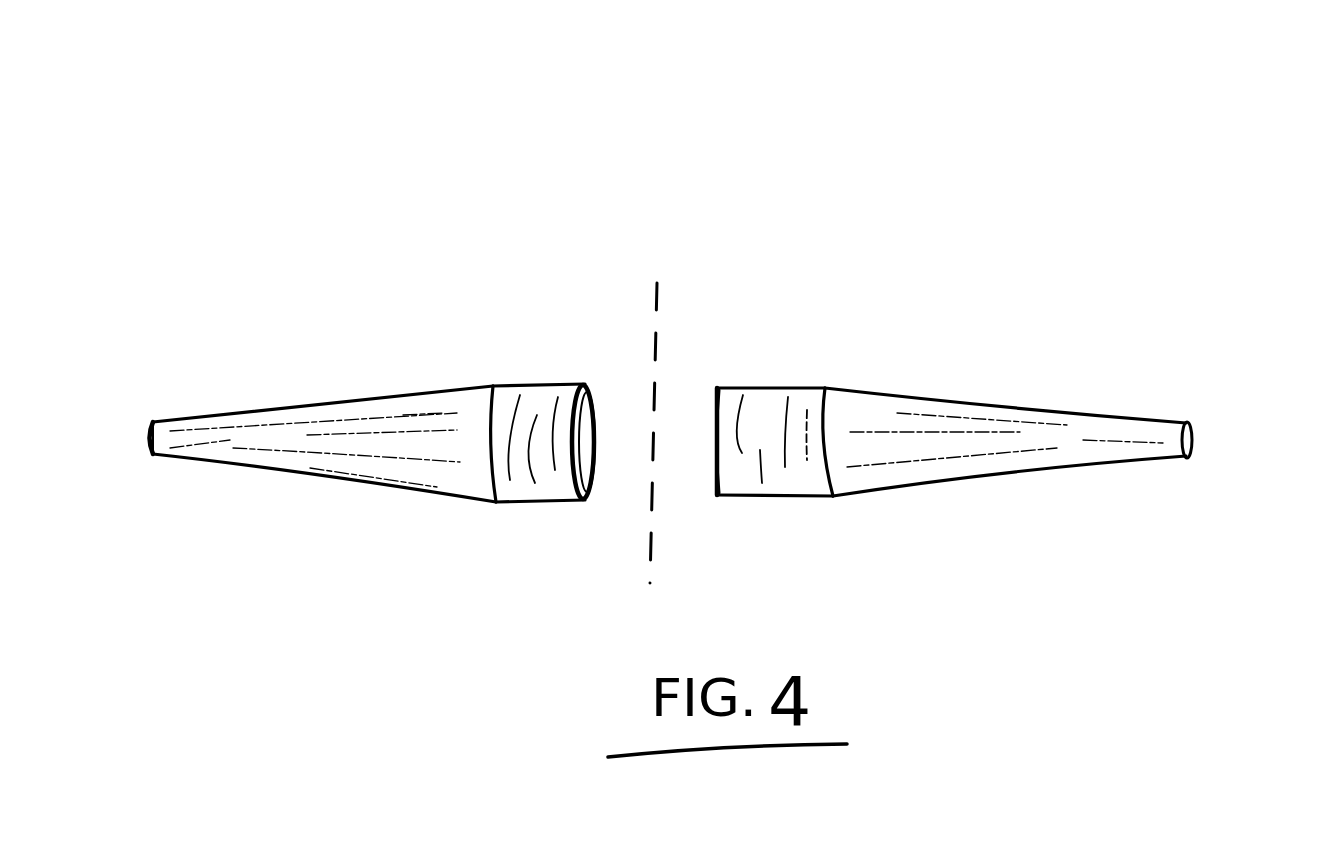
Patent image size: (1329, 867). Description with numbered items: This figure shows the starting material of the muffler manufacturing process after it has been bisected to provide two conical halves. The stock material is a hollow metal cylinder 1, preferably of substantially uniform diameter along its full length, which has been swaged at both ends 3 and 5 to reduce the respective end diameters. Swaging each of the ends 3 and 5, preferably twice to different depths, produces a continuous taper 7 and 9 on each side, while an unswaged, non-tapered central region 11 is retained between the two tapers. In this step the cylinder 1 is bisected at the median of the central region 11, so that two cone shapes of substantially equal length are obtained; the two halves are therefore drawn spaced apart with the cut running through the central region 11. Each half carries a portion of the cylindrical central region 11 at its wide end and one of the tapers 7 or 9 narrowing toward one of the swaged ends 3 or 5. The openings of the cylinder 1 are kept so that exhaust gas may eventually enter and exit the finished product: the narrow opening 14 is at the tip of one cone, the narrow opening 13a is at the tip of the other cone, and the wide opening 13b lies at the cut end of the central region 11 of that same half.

The hollow metal cylinder 1 is at (790, 222).
The first swaged end 3 is at (1000, 478).
The second swaged end 5 is at (288, 480).
The continuous taper 7 is at (937, 408).
The continuous taper 9 is at (400, 410).
The unswaged central region 11 is at (533, 398).
The opening 13a is at (1192, 430).
The opening 13b is at (715, 485).
The opening 14 is at (151, 453).